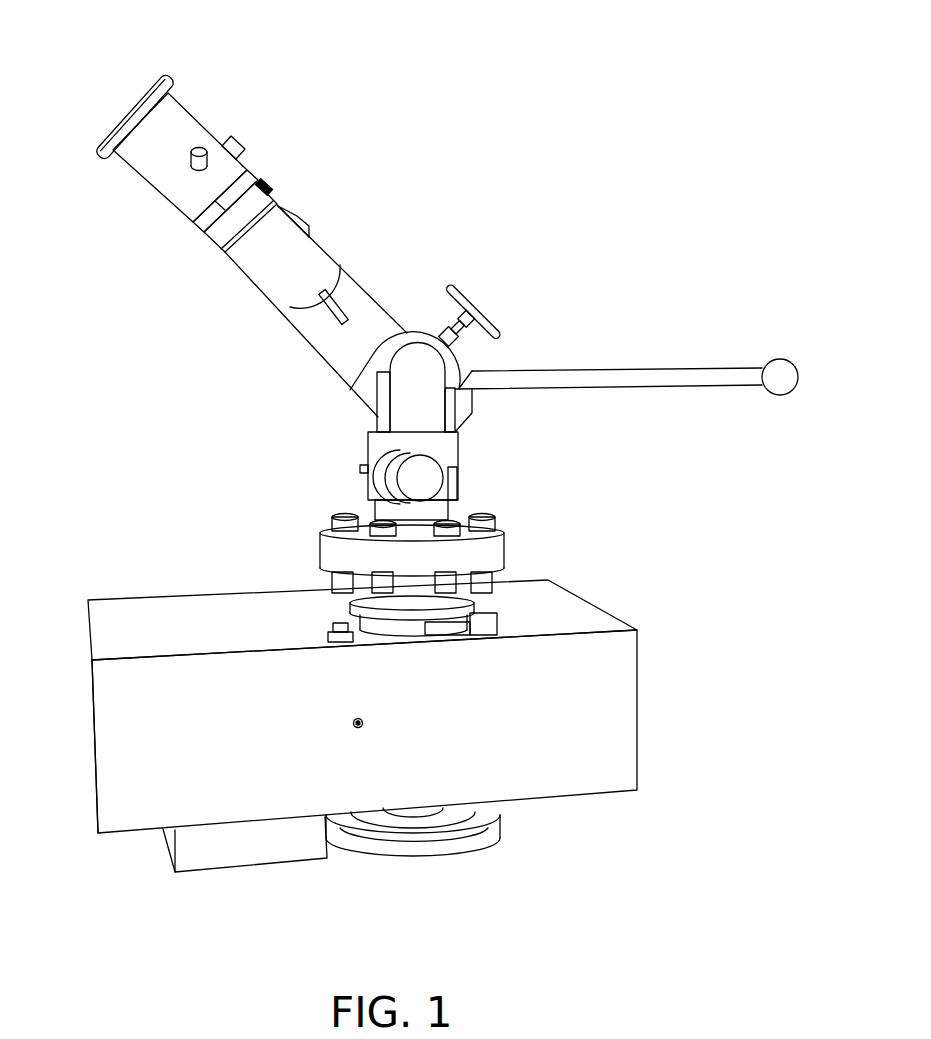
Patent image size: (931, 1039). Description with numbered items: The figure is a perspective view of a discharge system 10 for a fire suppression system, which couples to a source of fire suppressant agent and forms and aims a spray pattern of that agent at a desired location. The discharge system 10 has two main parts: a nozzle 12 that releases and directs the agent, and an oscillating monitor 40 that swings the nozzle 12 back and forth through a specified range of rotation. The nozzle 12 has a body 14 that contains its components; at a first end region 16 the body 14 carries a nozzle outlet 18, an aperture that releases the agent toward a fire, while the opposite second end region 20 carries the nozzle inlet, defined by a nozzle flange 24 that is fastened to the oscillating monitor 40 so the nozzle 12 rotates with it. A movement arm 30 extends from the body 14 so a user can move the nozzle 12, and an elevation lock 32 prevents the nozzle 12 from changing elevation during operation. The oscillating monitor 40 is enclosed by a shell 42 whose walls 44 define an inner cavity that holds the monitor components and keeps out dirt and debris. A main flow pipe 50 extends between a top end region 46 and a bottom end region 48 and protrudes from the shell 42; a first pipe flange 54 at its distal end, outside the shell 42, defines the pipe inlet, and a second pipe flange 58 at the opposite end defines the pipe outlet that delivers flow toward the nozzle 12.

The discharge system 10 is at (502, 116).
The nozzle 12 is at (304, 383).
The body 14 is at (328, 298).
The first end region 16 is at (182, 114).
The nozzle outlet 18 is at (113, 116).
The second end region 20 is at (462, 477).
The nozzle flange 24 is at (487, 520).
The movement arm 30 is at (637, 372).
The elevation lock 32 is at (473, 303).
The oscillating monitor 40 is at (648, 703).
The shell 42 is at (124, 788).
The walls 44 is at (112, 628).
The top end region 46 is at (413, 587).
The bottom end region 48 is at (472, 832).
The main flow pipe 50 is at (372, 856).
The first pipe flange 54 is at (438, 858).
The second pipe flange 58 is at (507, 545).